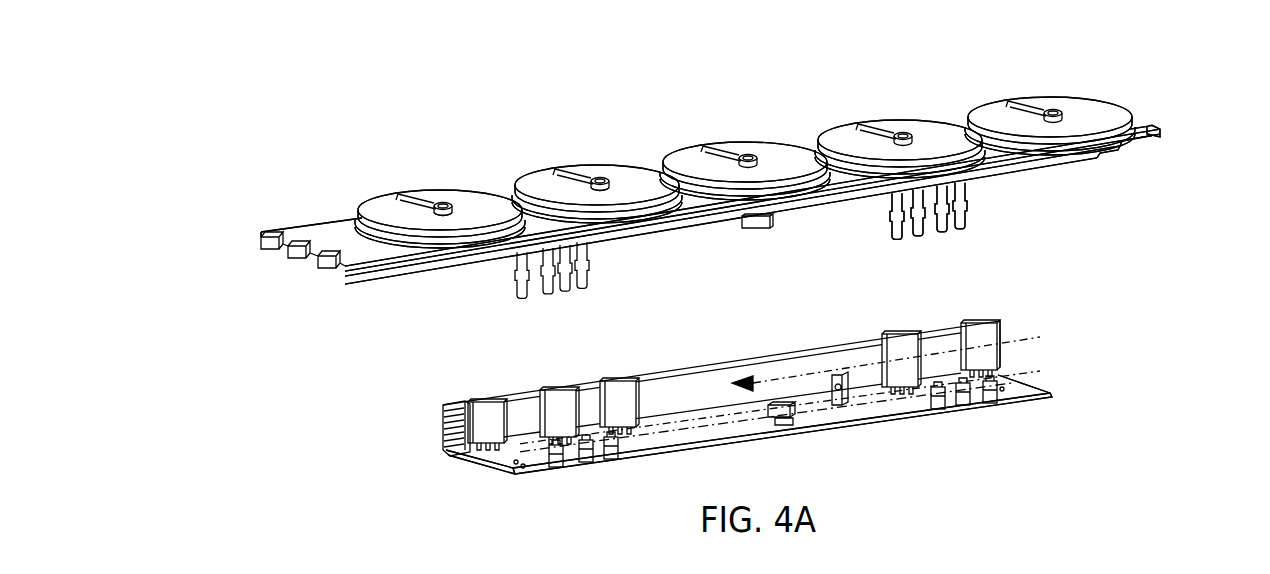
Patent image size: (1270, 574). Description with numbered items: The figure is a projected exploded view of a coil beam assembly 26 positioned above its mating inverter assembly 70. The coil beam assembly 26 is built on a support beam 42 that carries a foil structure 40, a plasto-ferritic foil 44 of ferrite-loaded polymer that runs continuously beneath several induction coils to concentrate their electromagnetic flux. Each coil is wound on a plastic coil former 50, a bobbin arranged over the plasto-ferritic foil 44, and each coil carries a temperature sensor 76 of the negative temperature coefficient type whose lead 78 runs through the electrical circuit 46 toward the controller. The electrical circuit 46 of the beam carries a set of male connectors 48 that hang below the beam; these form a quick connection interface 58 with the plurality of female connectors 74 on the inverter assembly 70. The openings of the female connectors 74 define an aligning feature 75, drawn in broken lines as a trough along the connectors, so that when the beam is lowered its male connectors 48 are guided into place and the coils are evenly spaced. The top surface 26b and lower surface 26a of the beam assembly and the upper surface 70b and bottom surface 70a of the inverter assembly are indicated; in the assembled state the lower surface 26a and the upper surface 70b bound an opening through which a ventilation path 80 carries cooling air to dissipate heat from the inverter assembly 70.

The coil beam assembly 26 is at (268, 272).
The lower surface 26a is at (447, 285).
The top surface 26b is at (598, 118).
The foil structure 40 is at (327, 224).
The support beam 42 is at (343, 262).
The plasto-ferritic foil 44 is at (311, 227).
The electrical circuit 46 is at (797, 242).
The male connector 48 is at (573, 288).
The coil former 50 is at (683, 158).
The connection interface 58 is at (992, 216).
The inverter assembly 70 is at (706, 424).
The bottom surface 70a is at (843, 440).
The upper surface 70b is at (697, 418).
The female connector 74 is at (597, 463).
The aligning feature 75 is at (490, 470).
The temperature sensor 76 is at (440, 203).
The lead 78 is at (443, 218).
The ventilation path 80 is at (990, 345).